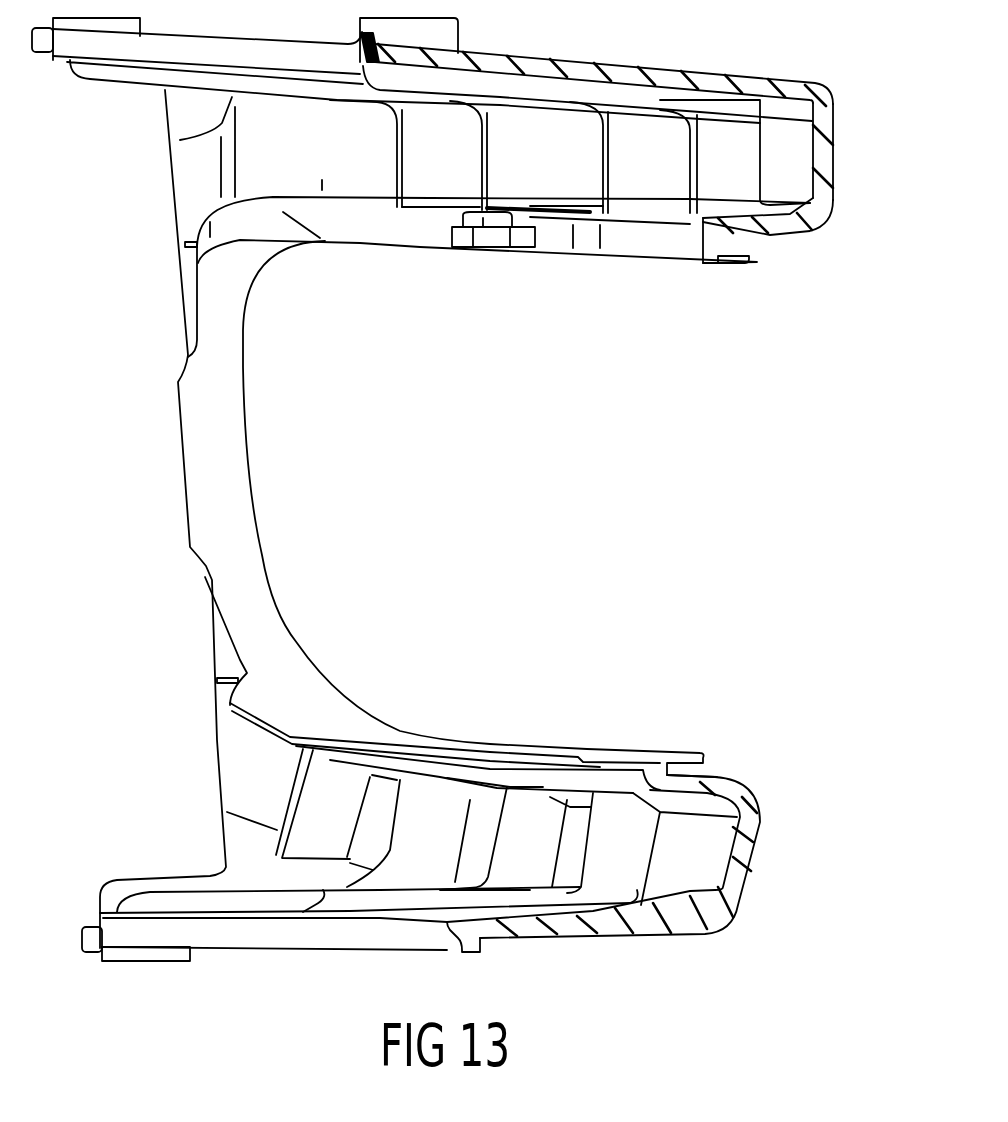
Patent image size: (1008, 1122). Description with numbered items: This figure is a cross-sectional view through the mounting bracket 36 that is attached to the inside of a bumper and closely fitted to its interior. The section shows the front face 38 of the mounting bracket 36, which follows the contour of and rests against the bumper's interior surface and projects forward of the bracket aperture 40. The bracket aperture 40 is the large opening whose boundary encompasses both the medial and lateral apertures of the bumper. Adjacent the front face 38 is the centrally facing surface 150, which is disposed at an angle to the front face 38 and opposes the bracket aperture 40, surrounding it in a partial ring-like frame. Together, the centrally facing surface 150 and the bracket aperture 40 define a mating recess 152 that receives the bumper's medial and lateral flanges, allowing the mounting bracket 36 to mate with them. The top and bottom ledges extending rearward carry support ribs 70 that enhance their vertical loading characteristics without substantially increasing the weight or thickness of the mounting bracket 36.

The mounting bracket 36 is at (690, 72).
The front face 38 is at (837, 133).
The centrally facing surface 150 is at (803, 230).
The mating recess 152 is at (748, 245).
The support ribs 70 is at (636, 182).
The bracket aperture 40 is at (272, 267).